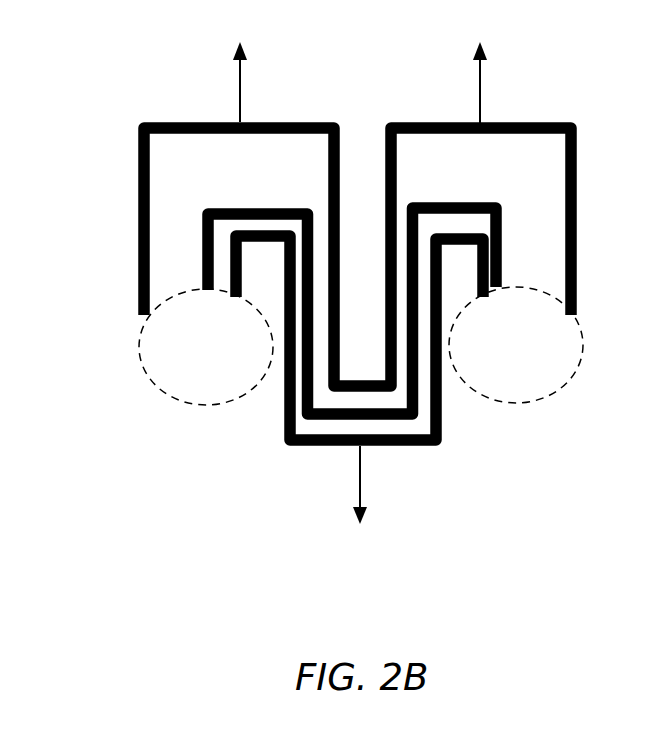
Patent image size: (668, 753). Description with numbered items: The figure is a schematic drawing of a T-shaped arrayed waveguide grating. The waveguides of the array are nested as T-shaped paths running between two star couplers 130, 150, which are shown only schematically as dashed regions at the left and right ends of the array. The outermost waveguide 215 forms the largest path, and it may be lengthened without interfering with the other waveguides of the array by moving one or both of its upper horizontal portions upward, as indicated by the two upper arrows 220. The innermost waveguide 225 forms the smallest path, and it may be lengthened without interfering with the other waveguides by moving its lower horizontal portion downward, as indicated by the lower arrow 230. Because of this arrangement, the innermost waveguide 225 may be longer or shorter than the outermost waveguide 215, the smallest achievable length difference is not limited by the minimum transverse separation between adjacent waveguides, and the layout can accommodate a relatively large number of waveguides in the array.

The outermost waveguide 215 is at (207, 122).
The innermost waveguide 225 is at (408, 446).
The upper arrows 220 is at (393, 83).
The lower arrow 230 is at (332, 485).
The star coupler 130 is at (122, 300).
The star coupler 150 is at (592, 298).